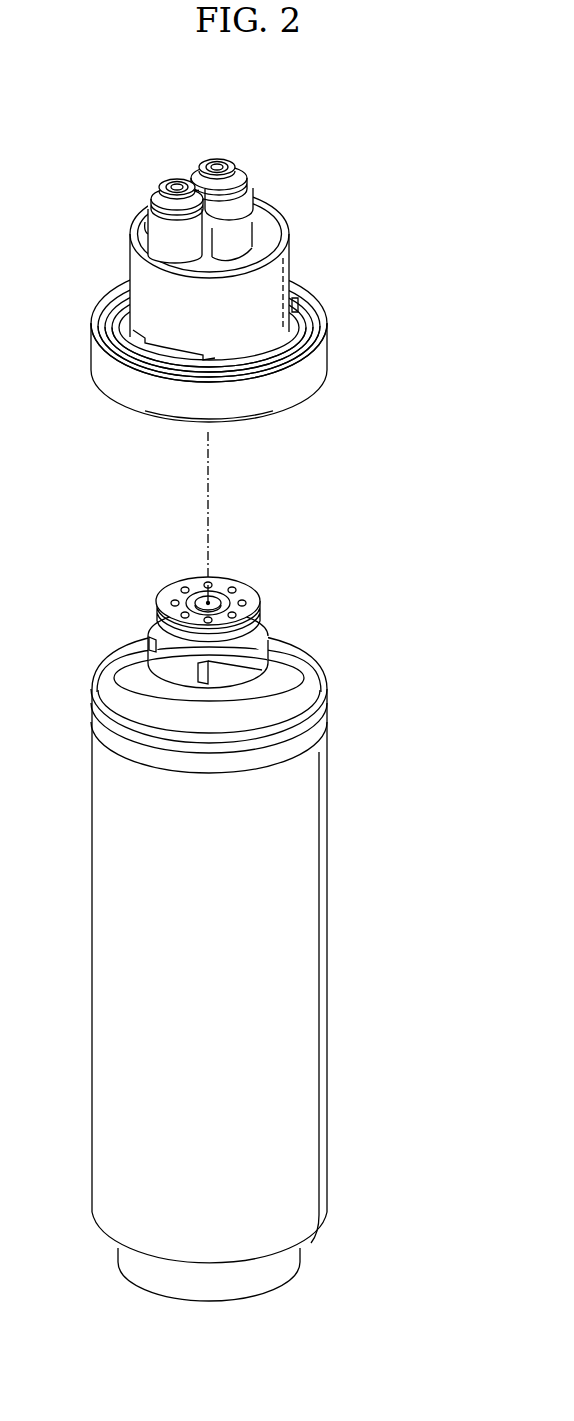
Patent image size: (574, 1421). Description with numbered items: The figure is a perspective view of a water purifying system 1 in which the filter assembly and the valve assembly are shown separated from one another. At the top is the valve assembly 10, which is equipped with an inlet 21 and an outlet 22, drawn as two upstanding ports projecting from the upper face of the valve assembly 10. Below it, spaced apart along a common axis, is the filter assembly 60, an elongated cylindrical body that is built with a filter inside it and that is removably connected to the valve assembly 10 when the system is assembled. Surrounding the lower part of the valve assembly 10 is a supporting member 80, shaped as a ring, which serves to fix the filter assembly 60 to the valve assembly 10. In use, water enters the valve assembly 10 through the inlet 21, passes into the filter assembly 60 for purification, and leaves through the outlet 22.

The water purifying system 1 is at (389, 501).
The valve assembly 10 is at (285, 217).
The inlet 21 is at (178, 189).
The outlet 22 is at (214, 160).
The filter assembly 60 is at (342, 968).
The supporting member 80 is at (329, 338).